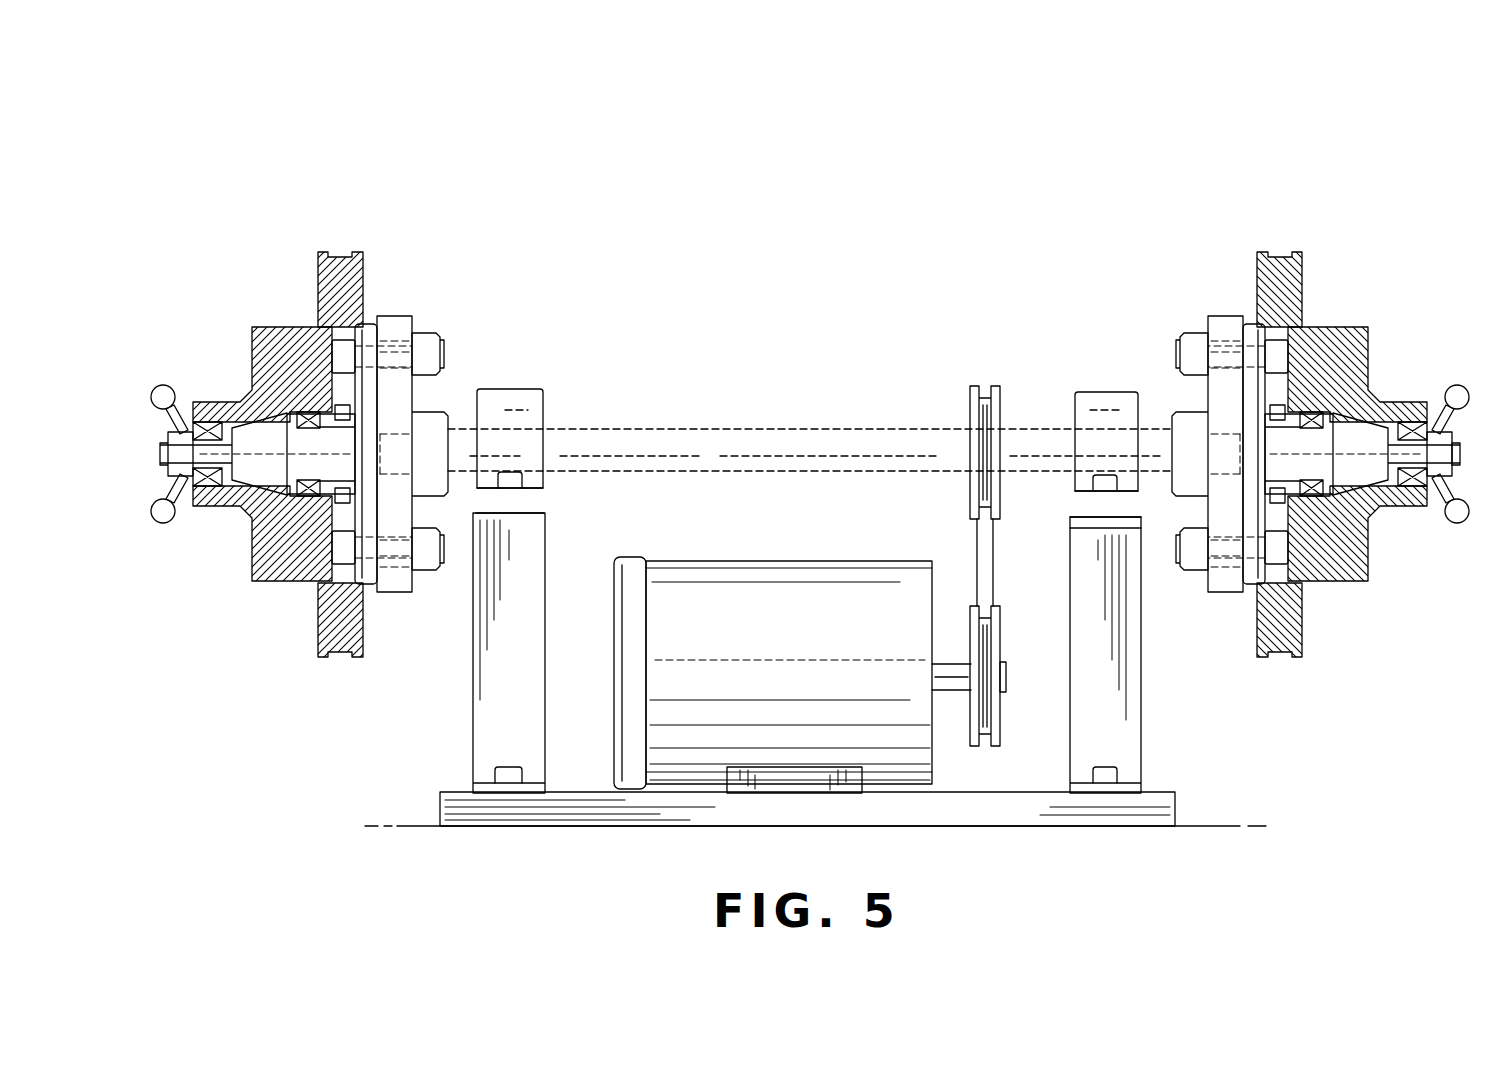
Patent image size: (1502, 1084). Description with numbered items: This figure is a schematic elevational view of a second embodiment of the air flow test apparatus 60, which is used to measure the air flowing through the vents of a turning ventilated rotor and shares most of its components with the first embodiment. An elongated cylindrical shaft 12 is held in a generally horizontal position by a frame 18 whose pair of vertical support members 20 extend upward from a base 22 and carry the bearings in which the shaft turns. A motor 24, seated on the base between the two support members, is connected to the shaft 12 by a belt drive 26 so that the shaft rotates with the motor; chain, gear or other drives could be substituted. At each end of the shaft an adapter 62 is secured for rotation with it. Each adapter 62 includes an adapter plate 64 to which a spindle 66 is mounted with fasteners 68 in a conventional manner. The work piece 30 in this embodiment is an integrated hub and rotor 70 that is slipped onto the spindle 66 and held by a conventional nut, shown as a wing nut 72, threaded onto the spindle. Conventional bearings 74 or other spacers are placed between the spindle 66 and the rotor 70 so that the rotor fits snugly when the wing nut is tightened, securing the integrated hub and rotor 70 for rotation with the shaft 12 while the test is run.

The shaft 12 is at (775, 437).
The frame 18 is at (836, 651).
The vertical support members 20 is at (1224, 756).
The base 22 is at (978, 829).
The motor 24 is at (778, 569).
The belt drive 26 is at (1003, 548).
The work piece 30 is at (370, 651).
The apparatus 60 is at (1240, 459).
The adapter 62 is at (397, 313).
The adapter plate 64 is at (1220, 325).
The spindle 66 is at (1365, 440).
The fasteners 68 is at (1178, 352).
The integrated hub and rotor 70 is at (1299, 659).
The wing nut 72 is at (1453, 386).
The bearings 74 is at (1406, 490).